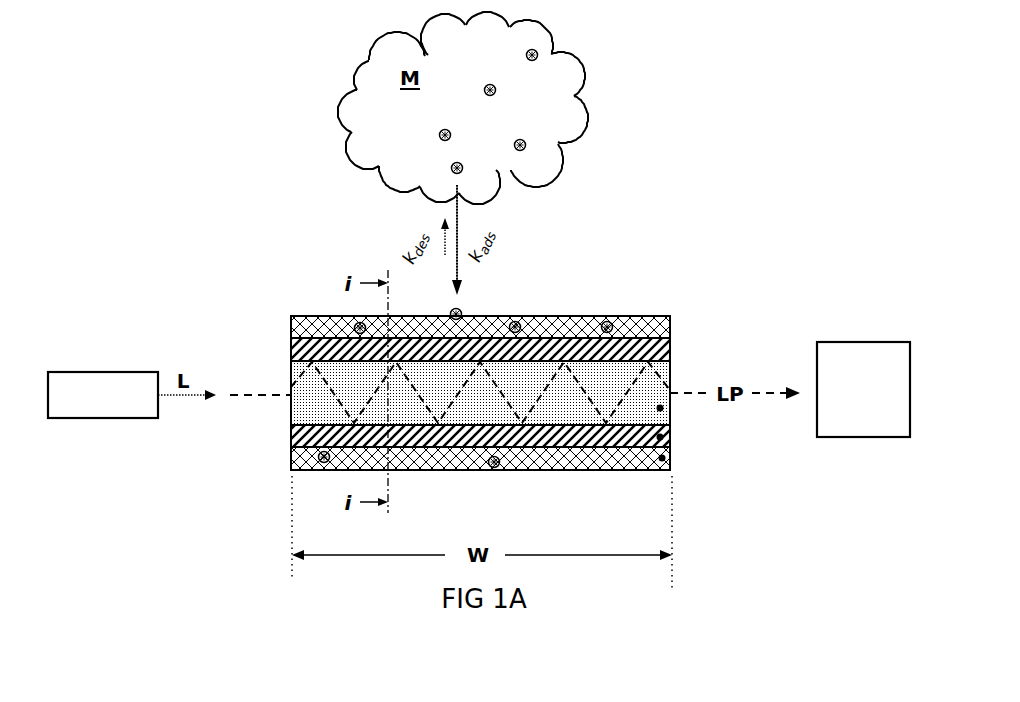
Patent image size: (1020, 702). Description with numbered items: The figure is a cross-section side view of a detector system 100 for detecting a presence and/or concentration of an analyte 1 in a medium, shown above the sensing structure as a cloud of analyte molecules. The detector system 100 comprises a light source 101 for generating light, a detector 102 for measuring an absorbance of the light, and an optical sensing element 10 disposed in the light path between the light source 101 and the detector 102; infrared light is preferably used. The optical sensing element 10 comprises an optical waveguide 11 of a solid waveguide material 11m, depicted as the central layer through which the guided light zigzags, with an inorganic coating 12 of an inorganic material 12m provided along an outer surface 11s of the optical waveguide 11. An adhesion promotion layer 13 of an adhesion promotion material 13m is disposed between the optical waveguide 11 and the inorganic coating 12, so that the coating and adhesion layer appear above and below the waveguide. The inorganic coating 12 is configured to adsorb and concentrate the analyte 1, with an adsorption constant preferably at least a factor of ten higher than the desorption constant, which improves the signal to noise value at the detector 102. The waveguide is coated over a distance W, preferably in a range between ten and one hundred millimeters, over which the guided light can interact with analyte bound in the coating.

The detector system 100 is at (110, 276).
The optical sensing element 10 is at (302, 289).
The inorganic coating 12 is at (284, 326).
The adhesion promotion layer 13 is at (283, 443).
The optical waveguide 11 is at (283, 413).
The outer surface 11s is at (662, 352).
The solid waveguide material 11m is at (660, 408).
The adhesion promotion material 13m is at (660, 437).
The inorganic material 12m is at (662, 458).
The analyte 1 is at (611, 296).
The light source 101 is at (103, 395).
The detector 102 is at (863, 389).